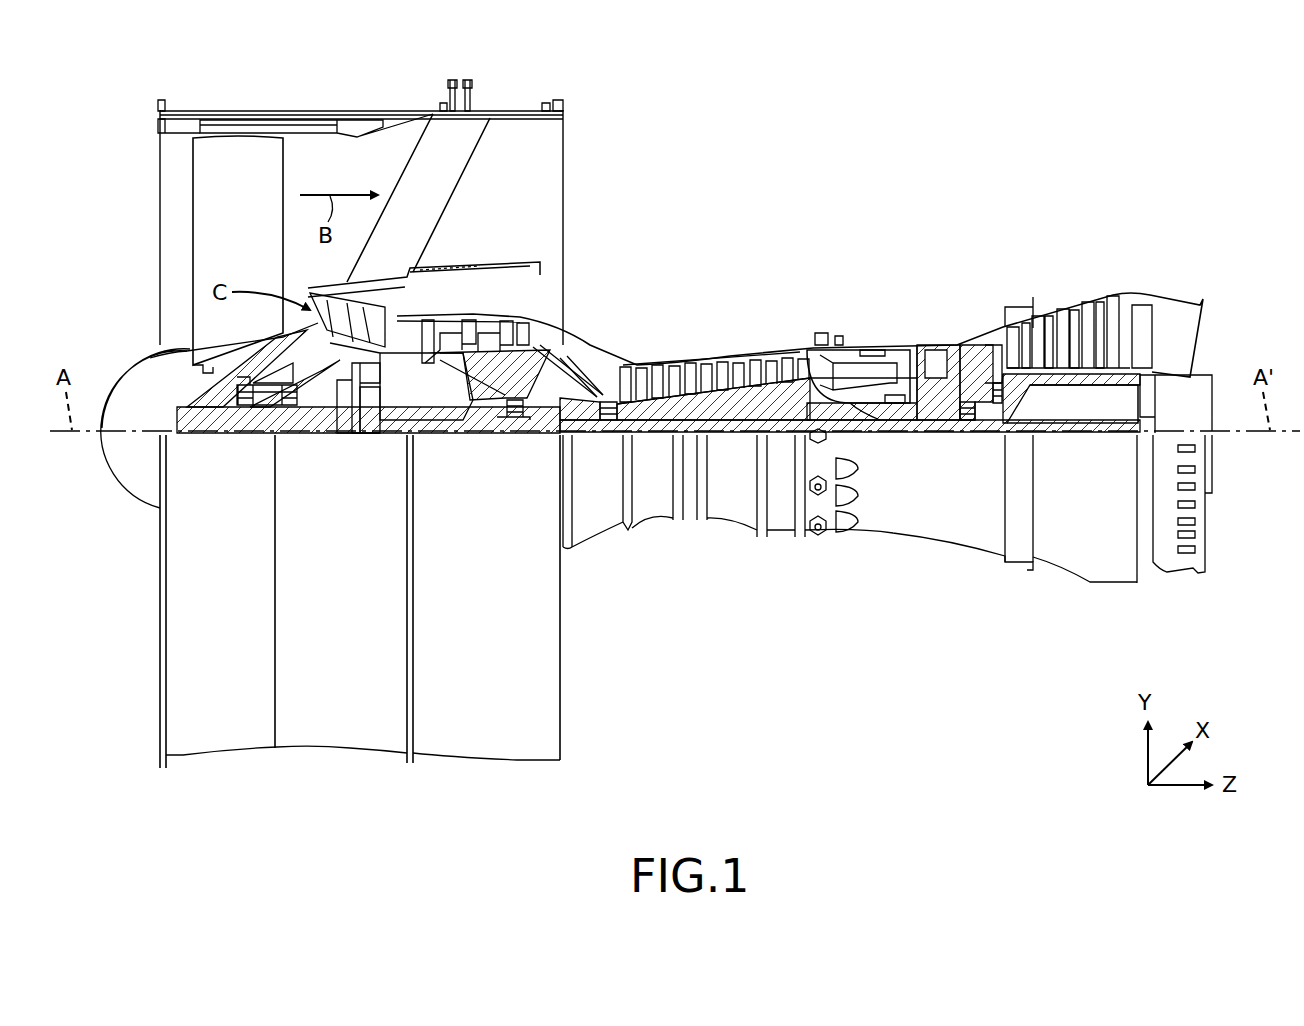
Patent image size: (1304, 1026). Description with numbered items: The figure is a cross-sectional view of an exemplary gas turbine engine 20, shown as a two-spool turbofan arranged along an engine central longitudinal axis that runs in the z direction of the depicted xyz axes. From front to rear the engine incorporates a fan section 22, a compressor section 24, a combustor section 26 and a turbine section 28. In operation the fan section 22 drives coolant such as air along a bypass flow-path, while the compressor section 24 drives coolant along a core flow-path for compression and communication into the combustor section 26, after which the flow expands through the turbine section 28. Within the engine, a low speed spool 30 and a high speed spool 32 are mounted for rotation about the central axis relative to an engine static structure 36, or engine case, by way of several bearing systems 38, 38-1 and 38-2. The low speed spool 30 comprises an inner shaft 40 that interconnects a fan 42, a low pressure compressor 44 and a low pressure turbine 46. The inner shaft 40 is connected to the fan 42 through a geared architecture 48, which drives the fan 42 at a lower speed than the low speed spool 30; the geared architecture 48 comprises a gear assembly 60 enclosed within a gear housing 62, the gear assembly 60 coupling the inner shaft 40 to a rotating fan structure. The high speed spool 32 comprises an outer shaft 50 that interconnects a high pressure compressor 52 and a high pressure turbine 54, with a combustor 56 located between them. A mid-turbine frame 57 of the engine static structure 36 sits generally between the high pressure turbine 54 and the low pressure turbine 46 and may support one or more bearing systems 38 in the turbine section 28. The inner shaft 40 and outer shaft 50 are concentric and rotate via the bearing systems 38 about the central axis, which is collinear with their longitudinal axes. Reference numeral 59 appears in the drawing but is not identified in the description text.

The gas turbine engine 20 is at (913, 145).
The fan section 22 is at (407, 88).
The compressor section 24 is at (415, 222).
The combustor section 26 is at (920, 230).
The turbine section 28 is at (1140, 230).
The low speed spool 30 is at (740, 452).
The high speed spool 32 is at (780, 400).
The engine static structure 36 is at (337, 732).
The bearing system 38 is at (983, 422).
The bearing system 38-1 is at (250, 408).
The bearing system 38-2 is at (520, 420).
The inner shaft 40 is at (585, 450).
The fan 42 is at (246, 240).
The low pressure compressor 44 is at (497, 325).
The low pressure turbine 46 is at (1073, 318).
The geared architecture 48 is at (368, 448).
The outer shaft 50 is at (855, 430).
The high pressure compressor 52 is at (717, 400).
The high pressure turbine 54 is at (930, 345).
The combustor 56 is at (860, 365).
The mid-turbine frame 57 is at (975, 375).
The airfoils 59 is at (985, 358).
The gear assembly 60 is at (377, 413).
The gear housing 62 is at (377, 388).